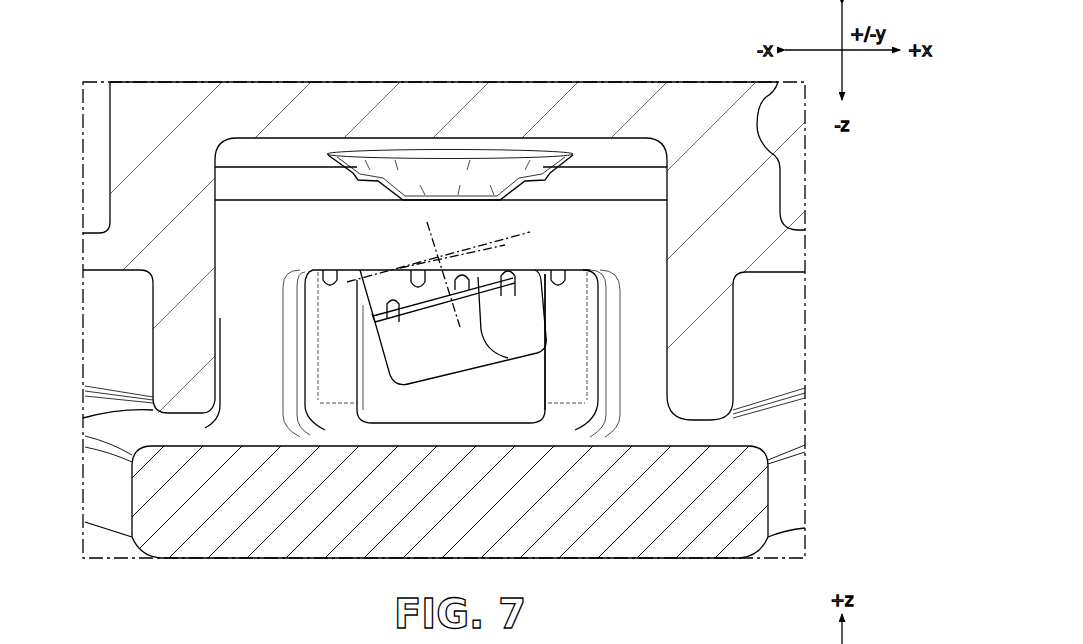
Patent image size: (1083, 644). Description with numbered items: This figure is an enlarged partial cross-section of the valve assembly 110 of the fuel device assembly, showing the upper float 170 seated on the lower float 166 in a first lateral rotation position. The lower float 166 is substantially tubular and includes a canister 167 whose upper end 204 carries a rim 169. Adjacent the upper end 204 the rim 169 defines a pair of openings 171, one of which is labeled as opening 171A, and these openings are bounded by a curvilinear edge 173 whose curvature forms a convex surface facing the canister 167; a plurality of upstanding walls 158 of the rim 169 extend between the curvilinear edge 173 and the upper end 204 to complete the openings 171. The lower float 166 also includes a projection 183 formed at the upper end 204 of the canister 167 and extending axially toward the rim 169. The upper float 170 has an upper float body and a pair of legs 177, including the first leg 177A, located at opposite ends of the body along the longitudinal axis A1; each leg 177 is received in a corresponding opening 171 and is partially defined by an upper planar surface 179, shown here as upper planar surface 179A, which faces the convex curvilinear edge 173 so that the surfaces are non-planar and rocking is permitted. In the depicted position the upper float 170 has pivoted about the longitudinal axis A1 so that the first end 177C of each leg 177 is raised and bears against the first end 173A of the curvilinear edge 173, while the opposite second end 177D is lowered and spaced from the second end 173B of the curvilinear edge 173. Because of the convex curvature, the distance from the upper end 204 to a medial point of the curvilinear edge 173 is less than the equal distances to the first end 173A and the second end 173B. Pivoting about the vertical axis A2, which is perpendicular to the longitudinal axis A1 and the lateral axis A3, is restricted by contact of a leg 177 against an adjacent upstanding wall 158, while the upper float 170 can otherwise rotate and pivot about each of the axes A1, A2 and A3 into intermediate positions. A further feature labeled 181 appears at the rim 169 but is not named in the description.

The valve assembly 110 is at (56, 258).
The upstanding walls 158 is at (227, 363).
The lower float 166 is at (768, 434).
The canister 167 is at (703, 540).
The rim 169 is at (606, 230).
The upper float 170 is at (488, 409).
The openings 171 is at (644, 353).
The retention member wall 171A is at (566, 392).
The curvilinear edge 173 is at (410, 265).
The first end of the curvilinear edge 173A is at (565, 263).
The second end of the curvilinear edge 173B is at (333, 263).
The legs 177 is at (443, 389).
The first leg 177A is at (417, 400).
The first end of the leg 177C is at (508, 280).
The second end of the leg 177D is at (399, 312).
The contact member 179 is at (595, 342).
The upper planar surface 179A is at (538, 362).
The funnel seat 181 is at (473, 193).
The projection 183 is at (357, 366).
The upper end of the canister 204 is at (125, 425).
The longitudinal axis A1 is at (441, 257).
The vertical axis A2 is at (441, 260).
The lateral axis A3 is at (398, 266).